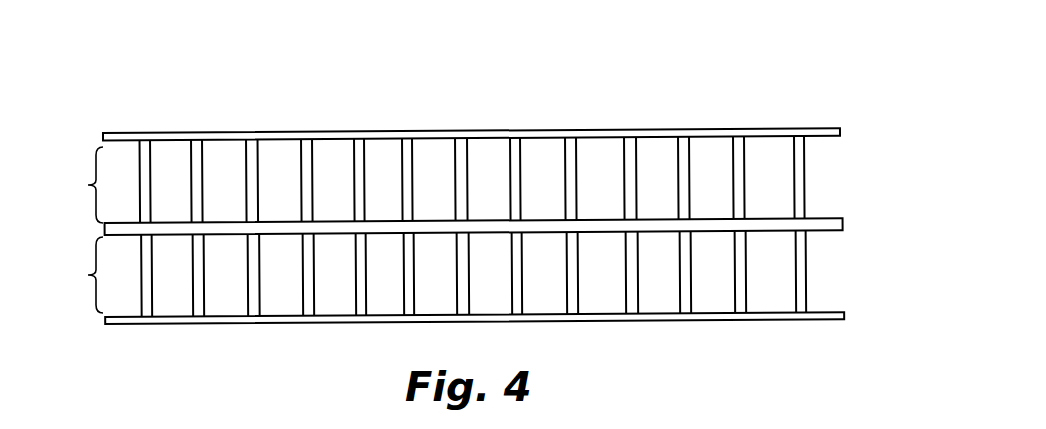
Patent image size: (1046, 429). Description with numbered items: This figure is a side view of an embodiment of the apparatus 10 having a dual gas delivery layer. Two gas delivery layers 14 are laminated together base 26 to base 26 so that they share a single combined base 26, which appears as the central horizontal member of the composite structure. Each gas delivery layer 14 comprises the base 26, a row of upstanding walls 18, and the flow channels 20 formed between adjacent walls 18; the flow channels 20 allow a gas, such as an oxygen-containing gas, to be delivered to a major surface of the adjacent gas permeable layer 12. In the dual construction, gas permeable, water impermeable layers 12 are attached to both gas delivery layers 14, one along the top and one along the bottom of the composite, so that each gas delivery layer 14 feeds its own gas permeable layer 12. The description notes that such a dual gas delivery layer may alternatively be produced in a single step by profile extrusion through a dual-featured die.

The apparatus 10 is at (682, 88).
The gas permeable layer 12 is at (124, 133).
The gas delivery layer 14 is at (77, 230).
The walls 18 is at (305, 157).
The flow channels 20 is at (480, 153).
The base 26 is at (829, 220).